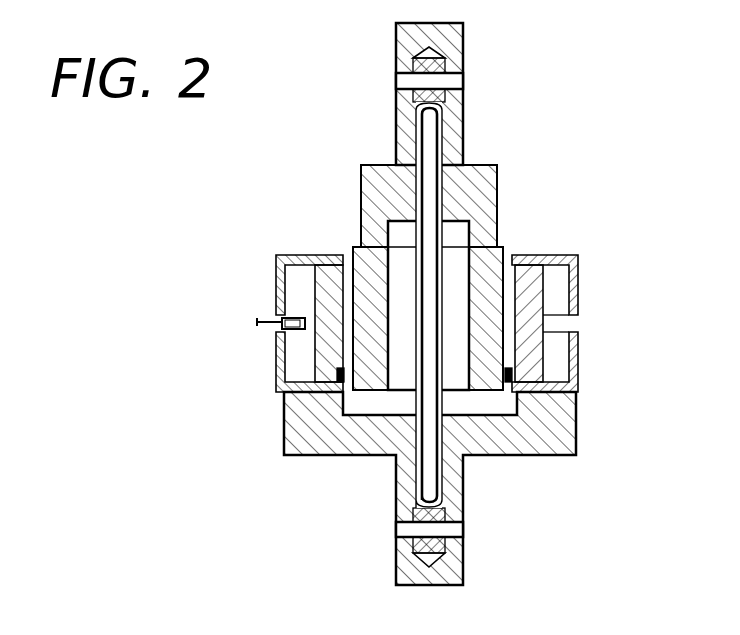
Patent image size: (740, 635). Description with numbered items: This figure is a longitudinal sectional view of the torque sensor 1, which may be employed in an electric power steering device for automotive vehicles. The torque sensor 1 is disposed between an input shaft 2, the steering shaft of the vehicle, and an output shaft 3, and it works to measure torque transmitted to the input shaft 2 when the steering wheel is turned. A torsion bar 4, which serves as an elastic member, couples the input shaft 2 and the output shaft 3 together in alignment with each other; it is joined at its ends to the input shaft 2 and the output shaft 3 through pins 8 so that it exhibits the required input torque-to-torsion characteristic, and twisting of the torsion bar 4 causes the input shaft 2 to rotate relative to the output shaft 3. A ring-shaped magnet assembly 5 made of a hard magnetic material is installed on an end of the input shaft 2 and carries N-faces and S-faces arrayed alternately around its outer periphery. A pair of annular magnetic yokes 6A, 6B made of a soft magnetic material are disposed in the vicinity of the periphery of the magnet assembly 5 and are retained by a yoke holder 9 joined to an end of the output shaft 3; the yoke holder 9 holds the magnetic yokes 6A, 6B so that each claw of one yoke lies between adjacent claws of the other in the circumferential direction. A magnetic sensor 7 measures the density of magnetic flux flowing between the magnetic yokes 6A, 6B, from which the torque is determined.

The torque sensor 1 is at (610, 108).
The input shaft 2 is at (448, 43).
The output shaft 3 is at (455, 575).
The torsion bar 4 is at (430, 136).
The magnet assembly 5 is at (488, 263).
The magnetic yoke 6A is at (578, 275).
The magnetic yoke 6B is at (578, 355).
The magnetic sensor 7 is at (283, 306).
The pins 8 is at (455, 83).
The yoke holder 9 is at (315, 353).